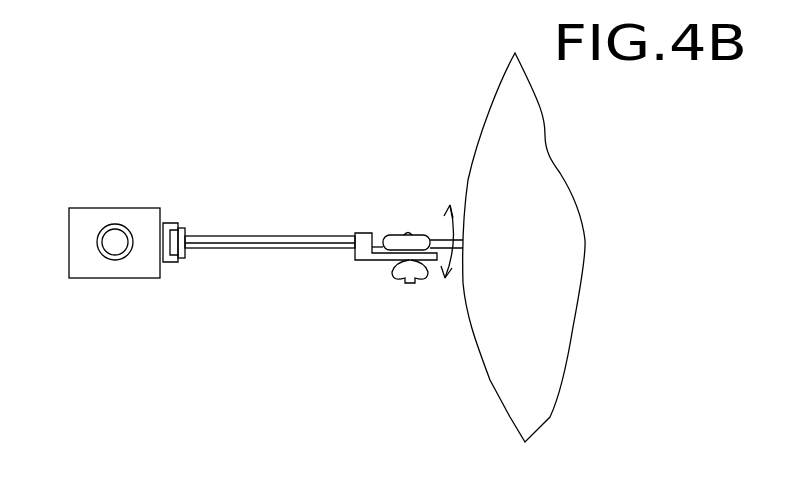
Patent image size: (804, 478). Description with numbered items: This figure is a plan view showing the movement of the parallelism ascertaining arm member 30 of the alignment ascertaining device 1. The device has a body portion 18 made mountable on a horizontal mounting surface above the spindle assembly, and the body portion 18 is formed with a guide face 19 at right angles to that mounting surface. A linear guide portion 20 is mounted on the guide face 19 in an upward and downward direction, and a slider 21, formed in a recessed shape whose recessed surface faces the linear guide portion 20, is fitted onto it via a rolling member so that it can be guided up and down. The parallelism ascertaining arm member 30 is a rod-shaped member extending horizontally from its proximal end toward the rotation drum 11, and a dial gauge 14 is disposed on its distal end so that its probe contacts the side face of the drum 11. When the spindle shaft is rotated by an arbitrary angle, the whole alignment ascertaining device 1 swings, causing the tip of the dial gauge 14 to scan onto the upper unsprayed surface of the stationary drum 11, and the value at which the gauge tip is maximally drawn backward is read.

The alignment ascertaining device 1 is at (381, 112).
The bone plate 11 is at (495, 382).
The dial gauge 14 is at (395, 235).
The body portion 18 is at (97, 217).
The guide face 19 is at (165, 222).
The linear guide portion 20 is at (172, 227).
The slider 21 is at (181, 262).
The parallelism ascertaining arm member 30 is at (286, 236).